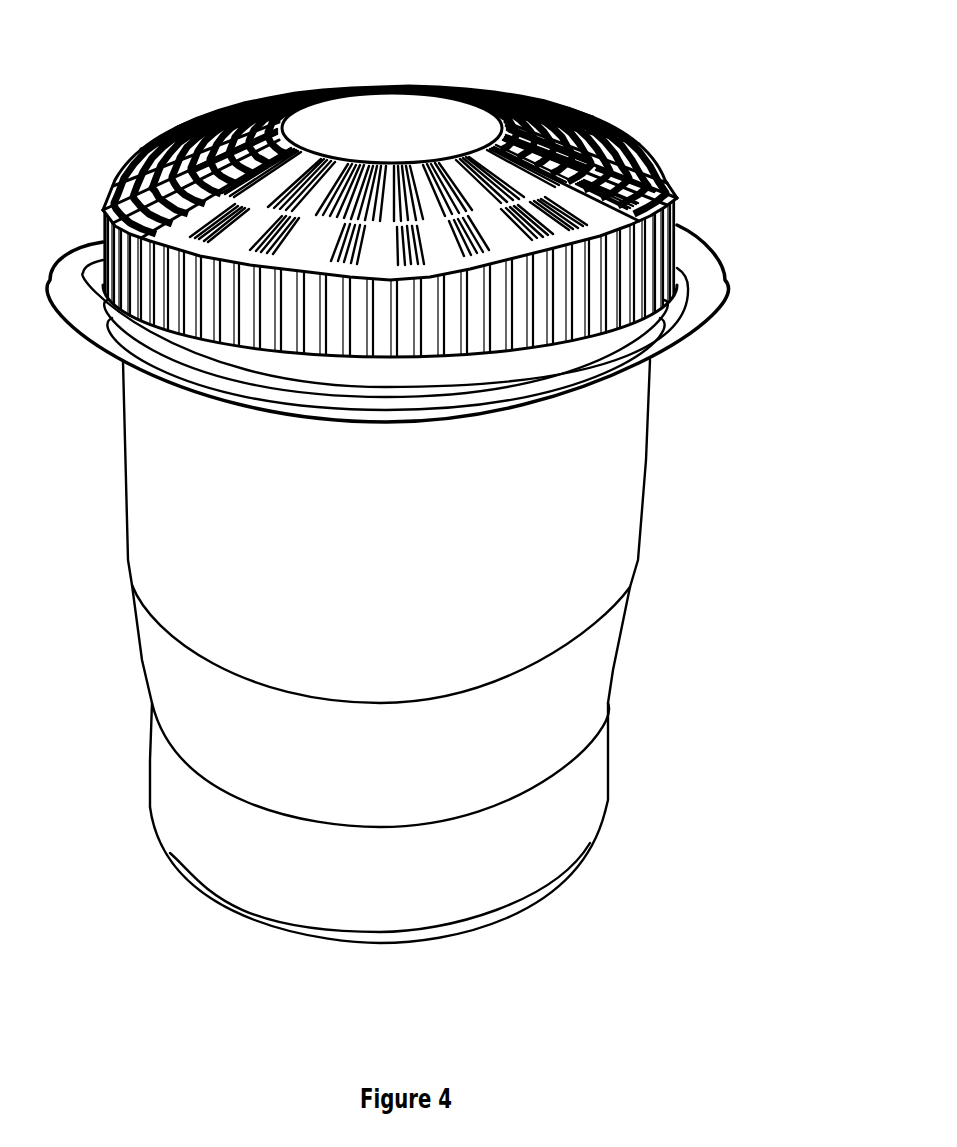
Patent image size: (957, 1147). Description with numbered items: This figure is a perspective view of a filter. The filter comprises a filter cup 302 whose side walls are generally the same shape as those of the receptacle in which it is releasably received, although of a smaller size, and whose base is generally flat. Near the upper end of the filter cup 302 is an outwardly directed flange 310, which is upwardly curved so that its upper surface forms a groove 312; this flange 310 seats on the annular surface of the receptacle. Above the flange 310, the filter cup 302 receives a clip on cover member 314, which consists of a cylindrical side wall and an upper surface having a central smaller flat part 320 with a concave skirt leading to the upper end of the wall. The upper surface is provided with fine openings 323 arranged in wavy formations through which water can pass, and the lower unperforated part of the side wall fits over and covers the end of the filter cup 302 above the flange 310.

The filter cup 302 is at (678, 440).
The flange 310 is at (710, 293).
The groove 312 is at (92, 277).
The cover member 314 is at (685, 190).
The central flat part 320 is at (438, 117).
The fine openings 323 is at (613, 130).